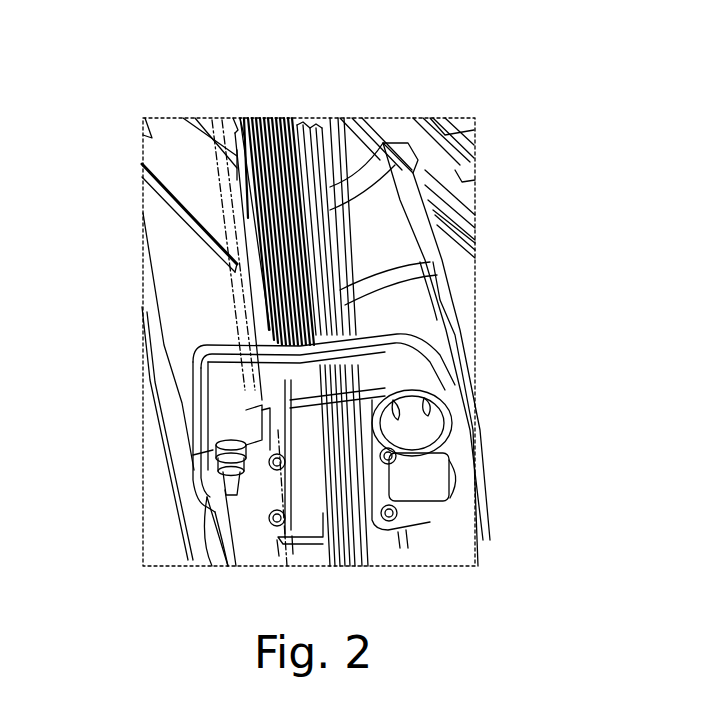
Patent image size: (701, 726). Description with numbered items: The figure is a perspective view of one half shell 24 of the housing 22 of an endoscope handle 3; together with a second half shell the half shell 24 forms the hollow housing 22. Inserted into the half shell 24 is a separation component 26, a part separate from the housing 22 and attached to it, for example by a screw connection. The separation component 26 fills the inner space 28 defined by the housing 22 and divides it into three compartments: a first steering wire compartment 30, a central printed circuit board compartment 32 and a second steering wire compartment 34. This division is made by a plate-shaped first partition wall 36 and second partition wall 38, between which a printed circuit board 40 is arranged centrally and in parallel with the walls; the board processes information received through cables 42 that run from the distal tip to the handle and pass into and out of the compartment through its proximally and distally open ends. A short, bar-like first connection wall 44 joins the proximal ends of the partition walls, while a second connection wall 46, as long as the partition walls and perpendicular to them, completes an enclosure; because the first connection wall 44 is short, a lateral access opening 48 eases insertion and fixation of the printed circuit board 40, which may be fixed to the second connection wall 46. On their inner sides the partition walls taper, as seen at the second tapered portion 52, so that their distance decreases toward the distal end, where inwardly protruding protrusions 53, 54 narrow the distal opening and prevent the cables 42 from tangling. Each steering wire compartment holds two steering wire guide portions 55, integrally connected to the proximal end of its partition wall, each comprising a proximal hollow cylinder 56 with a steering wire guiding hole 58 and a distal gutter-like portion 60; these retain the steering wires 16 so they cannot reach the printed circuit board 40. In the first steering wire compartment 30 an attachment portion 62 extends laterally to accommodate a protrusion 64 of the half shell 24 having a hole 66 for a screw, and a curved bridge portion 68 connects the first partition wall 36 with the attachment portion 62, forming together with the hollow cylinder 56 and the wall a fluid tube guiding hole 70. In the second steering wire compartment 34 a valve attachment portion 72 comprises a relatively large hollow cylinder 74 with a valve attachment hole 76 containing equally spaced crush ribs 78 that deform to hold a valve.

The endoscope handle 3 is at (487, 338).
The steering wires 16 is at (277, 550).
The housing 22 is at (462, 290).
The half shell 24 is at (432, 250).
The separation component 26 is at (440, 360).
The inner space 28 is at (444, 288).
The first steering wire compartment 30 is at (182, 192).
The printed circuit board compartment 32 is at (279, 150).
The second steering wire compartment 34 is at (362, 156).
The first partition wall 36 is at (236, 232).
The second partition wall 38 is at (332, 170).
The printed circuit board 40 is at (440, 262).
The cables 42 is at (267, 165).
The first connection wall 44 is at (447, 405).
The second connection wall 46 is at (303, 520).
The access opening 48 is at (325, 238).
The second tapered portion 52 is at (340, 197).
The protrusion 53 is at (254, 170).
The protrusion 54 is at (312, 235).
The steering wire guide portions 55 is at (422, 515).
The proximal hollow cylinder 56 is at (235, 432).
The steering wire guiding hole 58 is at (230, 462).
The distal gutter-like portion 60 is at (432, 356).
The attachment portion 62 is at (186, 462).
The protrusion 64 is at (210, 505).
The hole 66 is at (215, 485).
The bridge portion 68 is at (224, 345).
The fluid tube guiding hole 70 is at (226, 389).
The valve attachment portion 72 is at (433, 418).
The hollow cylinder 74 is at (420, 512).
The valve attachment hole 76 is at (407, 463).
The crush ribs 78 is at (462, 428).